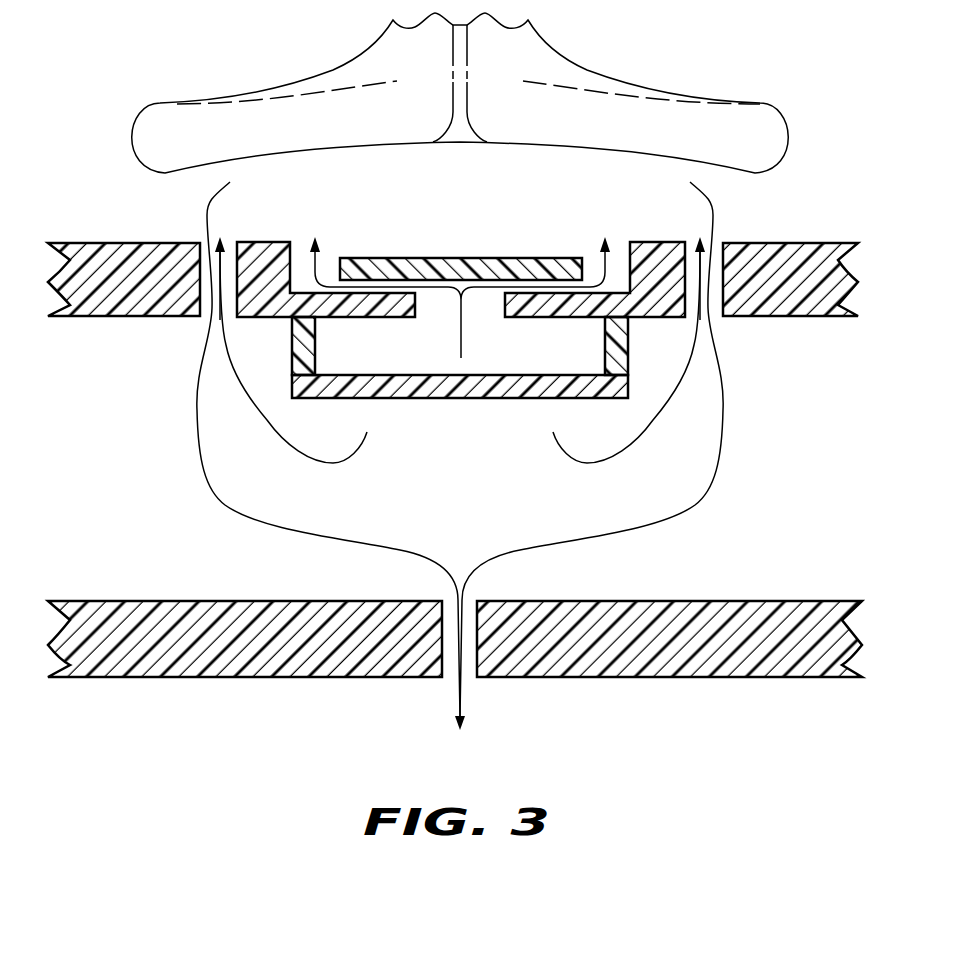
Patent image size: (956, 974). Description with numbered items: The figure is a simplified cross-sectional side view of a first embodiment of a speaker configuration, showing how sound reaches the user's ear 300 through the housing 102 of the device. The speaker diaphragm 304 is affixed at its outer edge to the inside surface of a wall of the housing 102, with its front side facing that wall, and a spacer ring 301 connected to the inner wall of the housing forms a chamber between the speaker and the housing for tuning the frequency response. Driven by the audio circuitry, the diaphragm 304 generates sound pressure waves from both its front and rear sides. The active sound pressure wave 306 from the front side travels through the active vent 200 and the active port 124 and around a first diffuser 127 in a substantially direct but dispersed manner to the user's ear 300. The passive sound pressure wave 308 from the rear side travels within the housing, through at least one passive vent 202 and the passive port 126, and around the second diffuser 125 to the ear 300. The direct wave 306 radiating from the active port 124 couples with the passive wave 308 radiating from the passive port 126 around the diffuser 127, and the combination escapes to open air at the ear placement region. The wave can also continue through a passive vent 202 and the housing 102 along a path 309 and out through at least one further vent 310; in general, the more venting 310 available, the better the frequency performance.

The user's ear 300 is at (653, 90).
The housing 102 is at (137, 242).
The second diffuser 125 is at (652, 242).
The first diffuser 127 is at (403, 258).
The active vent 200 is at (479, 399).
The spacer ring 301 is at (630, 343).
The diaphragm 304 is at (510, 398).
The active port 124 is at (327, 255).
The active sound pressure wave 306 is at (460, 350).
The passive sound pressure wave 308 is at (267, 447).
The passive port 126 is at (228, 253).
The passive vent 202 is at (202, 320).
The path 309 is at (458, 698).
The vent 310 is at (470, 676).